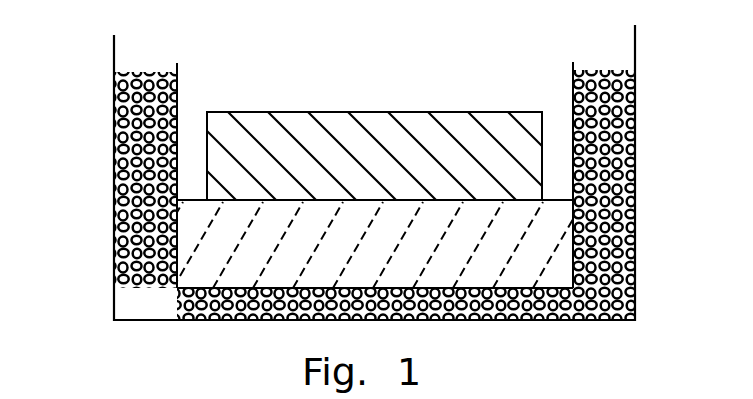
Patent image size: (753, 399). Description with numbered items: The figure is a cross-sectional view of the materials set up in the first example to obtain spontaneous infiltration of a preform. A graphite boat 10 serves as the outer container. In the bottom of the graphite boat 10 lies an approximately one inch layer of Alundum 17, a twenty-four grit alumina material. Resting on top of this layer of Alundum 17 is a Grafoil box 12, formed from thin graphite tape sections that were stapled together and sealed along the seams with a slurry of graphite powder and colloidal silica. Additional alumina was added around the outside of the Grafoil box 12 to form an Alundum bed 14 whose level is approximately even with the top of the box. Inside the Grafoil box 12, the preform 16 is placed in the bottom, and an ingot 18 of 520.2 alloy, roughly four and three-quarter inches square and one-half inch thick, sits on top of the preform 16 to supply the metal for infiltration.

The graphite boat 10 is at (636, 47).
The Grafoil box 12 is at (178, 70).
The Alundum bed 14 is at (114, 154).
The preform 16 is at (543, 248).
The layer of Alundum 17 is at (523, 303).
The ingot 18 is at (433, 122).